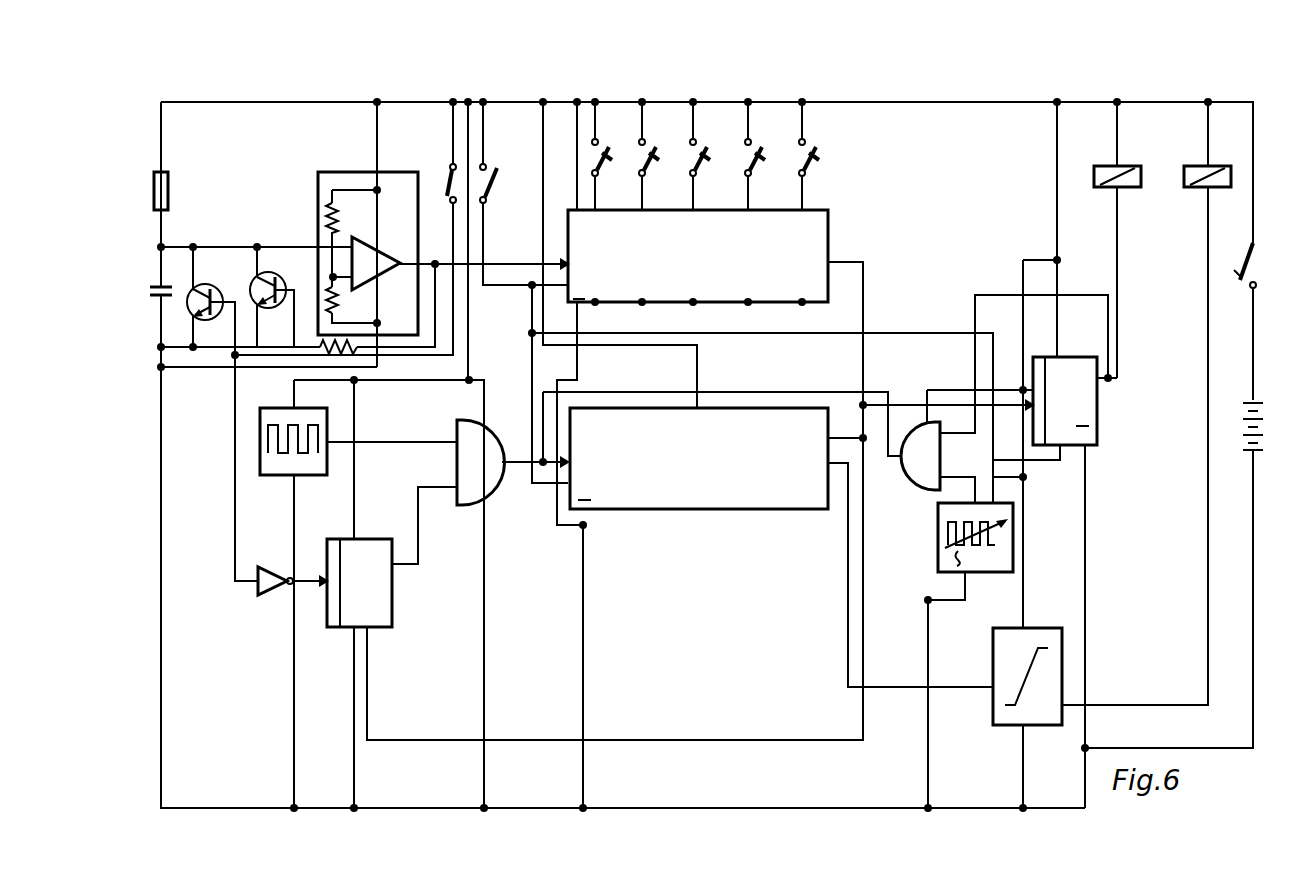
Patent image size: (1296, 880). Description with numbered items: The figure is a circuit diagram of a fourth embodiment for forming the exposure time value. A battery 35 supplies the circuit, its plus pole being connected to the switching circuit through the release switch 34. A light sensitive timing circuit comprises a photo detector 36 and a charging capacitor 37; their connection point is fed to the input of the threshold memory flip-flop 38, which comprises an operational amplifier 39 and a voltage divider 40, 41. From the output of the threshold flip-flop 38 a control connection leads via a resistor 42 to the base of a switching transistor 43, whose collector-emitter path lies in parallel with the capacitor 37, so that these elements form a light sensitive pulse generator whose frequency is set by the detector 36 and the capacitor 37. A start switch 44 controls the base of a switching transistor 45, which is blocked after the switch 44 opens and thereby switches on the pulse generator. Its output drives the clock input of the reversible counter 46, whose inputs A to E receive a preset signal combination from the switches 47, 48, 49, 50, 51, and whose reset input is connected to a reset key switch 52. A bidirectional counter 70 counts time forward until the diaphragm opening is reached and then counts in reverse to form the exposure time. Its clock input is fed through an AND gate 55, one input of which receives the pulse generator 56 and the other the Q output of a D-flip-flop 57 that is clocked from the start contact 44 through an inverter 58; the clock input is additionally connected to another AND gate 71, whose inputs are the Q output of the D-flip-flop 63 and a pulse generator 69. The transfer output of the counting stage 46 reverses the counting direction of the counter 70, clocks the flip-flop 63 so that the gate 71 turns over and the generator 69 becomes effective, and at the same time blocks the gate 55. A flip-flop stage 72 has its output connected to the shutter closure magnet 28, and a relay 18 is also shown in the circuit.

The relay 18 is at (1120, 166).
The shutter closure magnet 28 is at (1210, 166).
The release switch 34 is at (1245, 290).
The battery 35 is at (1245, 455).
The photo detector 36 is at (170, 186).
The charging capacitor 37 is at (178, 283).
The threshold memory flip-flop 38 is at (343, 172).
The operational amplifier 39 is at (392, 262).
The voltage divider resistor 40 is at (351, 218).
The voltage divider resistor 41 is at (333, 300).
The resistor 42 is at (357, 345).
The switching transistor 43 is at (272, 271).
The start switch 44 is at (446, 204).
The switching transistor 45 is at (207, 283).
The reversible counter 46 is at (828, 290).
The switch 47 is at (600, 145).
The switch 48 is at (648, 145).
The switch 49 is at (699, 145).
The switch 50 is at (753, 145).
The switch 51 is at (807, 145).
The reset key switch 52 is at (491, 163).
The AND gate 55 is at (474, 478).
The pulse generator 56 is at (275, 410).
The D-flip-flop 57 is at (385, 535).
The inverter 58 is at (268, 568).
The D-flip-flop 63 is at (1092, 357).
The pulse generator 69 is at (996, 558).
The bidirectional counter 70 is at (789, 492).
The AND gate 71 is at (905, 472).
The flip-flop stage 72 is at (1040, 710).